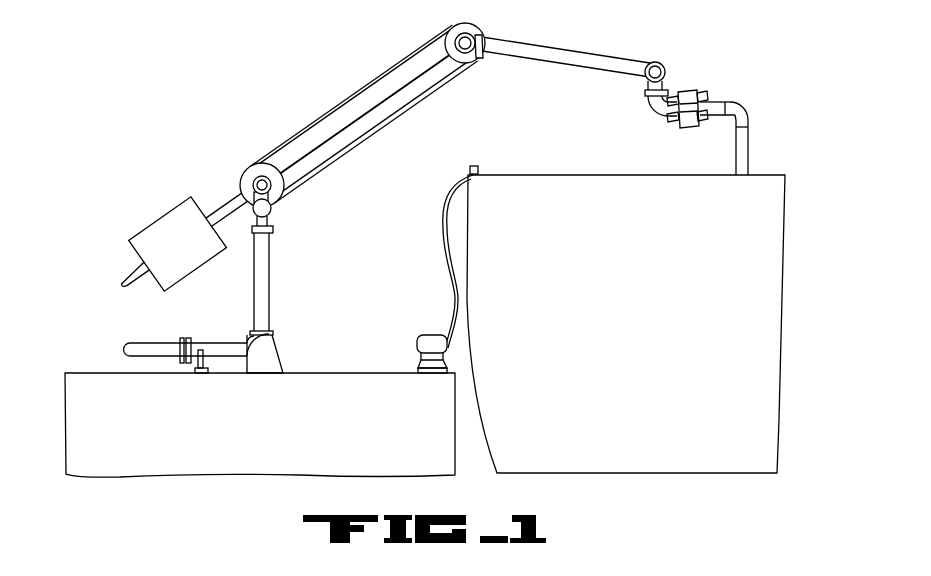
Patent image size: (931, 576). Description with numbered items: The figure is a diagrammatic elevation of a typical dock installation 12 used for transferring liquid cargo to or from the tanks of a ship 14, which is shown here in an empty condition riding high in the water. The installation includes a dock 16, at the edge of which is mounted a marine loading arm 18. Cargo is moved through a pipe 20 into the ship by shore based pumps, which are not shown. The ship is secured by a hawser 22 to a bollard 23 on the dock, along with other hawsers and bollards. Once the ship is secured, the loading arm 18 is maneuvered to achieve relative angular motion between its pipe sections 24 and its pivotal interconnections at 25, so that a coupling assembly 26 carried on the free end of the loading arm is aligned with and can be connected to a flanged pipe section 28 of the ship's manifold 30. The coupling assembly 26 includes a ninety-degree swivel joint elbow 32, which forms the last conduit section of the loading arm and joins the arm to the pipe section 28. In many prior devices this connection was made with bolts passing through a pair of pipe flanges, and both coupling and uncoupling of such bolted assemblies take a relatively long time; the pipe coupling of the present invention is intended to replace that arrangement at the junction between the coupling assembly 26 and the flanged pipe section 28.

The dock installation 12 is at (322, 78).
The ship 14 is at (646, 321).
The dock 16 is at (233, 431).
The marine loading arm 18 is at (572, 54).
The pipe 20 is at (150, 342).
The hawser 22 is at (455, 300).
The bollard 23 is at (418, 340).
The pipe sections 24 is at (352, 135).
The pivotal interconnections 25 is at (471, 60).
The coupling assembly 26 is at (704, 92).
The flanged pipe section 28 is at (718, 104).
The ship's manifold 30 is at (750, 147).
The swivel joint elbow 32 is at (659, 110).